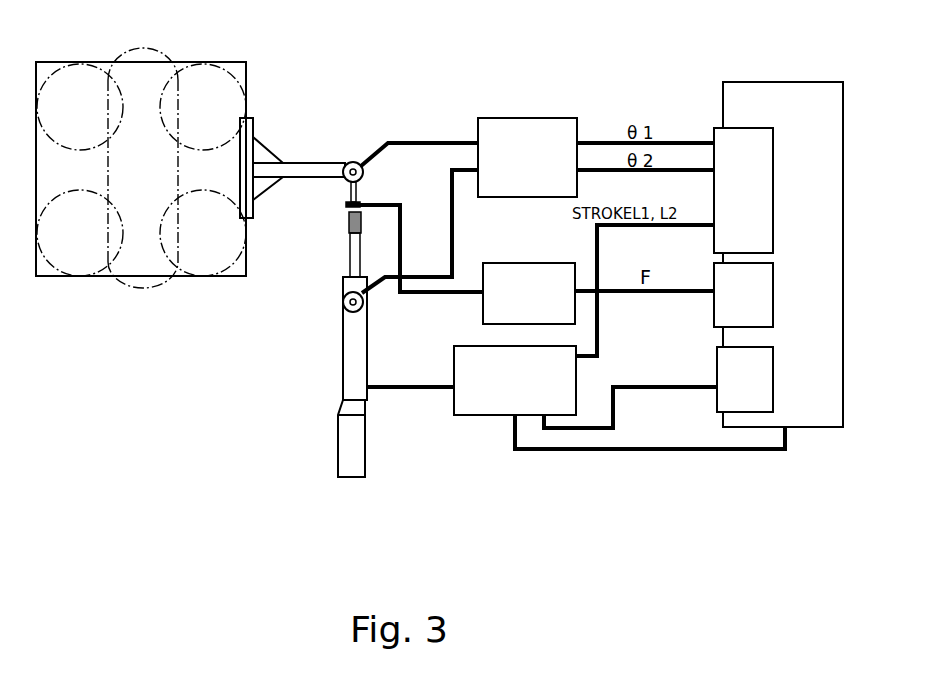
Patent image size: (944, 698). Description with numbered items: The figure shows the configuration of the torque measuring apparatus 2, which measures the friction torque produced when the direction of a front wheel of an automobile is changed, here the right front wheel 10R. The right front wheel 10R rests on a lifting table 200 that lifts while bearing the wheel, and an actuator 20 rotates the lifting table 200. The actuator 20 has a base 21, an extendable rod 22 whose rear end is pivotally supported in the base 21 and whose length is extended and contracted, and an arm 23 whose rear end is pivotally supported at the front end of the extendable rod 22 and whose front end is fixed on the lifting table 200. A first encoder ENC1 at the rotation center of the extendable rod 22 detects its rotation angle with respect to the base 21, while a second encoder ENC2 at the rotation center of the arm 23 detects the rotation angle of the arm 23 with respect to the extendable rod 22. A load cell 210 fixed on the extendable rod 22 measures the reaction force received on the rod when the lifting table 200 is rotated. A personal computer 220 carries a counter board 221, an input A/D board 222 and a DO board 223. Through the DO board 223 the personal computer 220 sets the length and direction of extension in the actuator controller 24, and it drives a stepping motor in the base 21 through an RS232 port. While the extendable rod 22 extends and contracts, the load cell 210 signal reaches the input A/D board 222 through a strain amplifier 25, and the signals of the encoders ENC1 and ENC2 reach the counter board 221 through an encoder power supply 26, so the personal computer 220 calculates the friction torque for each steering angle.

The torque measuring apparatus 2 is at (664, 71).
The actuator 20 is at (393, 100).
The lifting table 200 is at (237, 62).
The right front wheel 10R is at (150, 45).
The base 21 is at (347, 357).
The extendable rod 22 is at (350, 258).
The arm 23 is at (303, 179).
The actuator controller 24 is at (483, 416).
The strain amplifier 25 is at (520, 262).
The encoder power supply 26 is at (533, 118).
The load cell 210 is at (361, 204).
The personal computer 220 is at (800, 82).
The counter board 221 is at (775, 212).
The input A/D board 222 is at (775, 294).
The DO board 223 is at (775, 377).
The first encoder ENC1 is at (363, 307).
The second encoder ENC2 is at (364, 173).